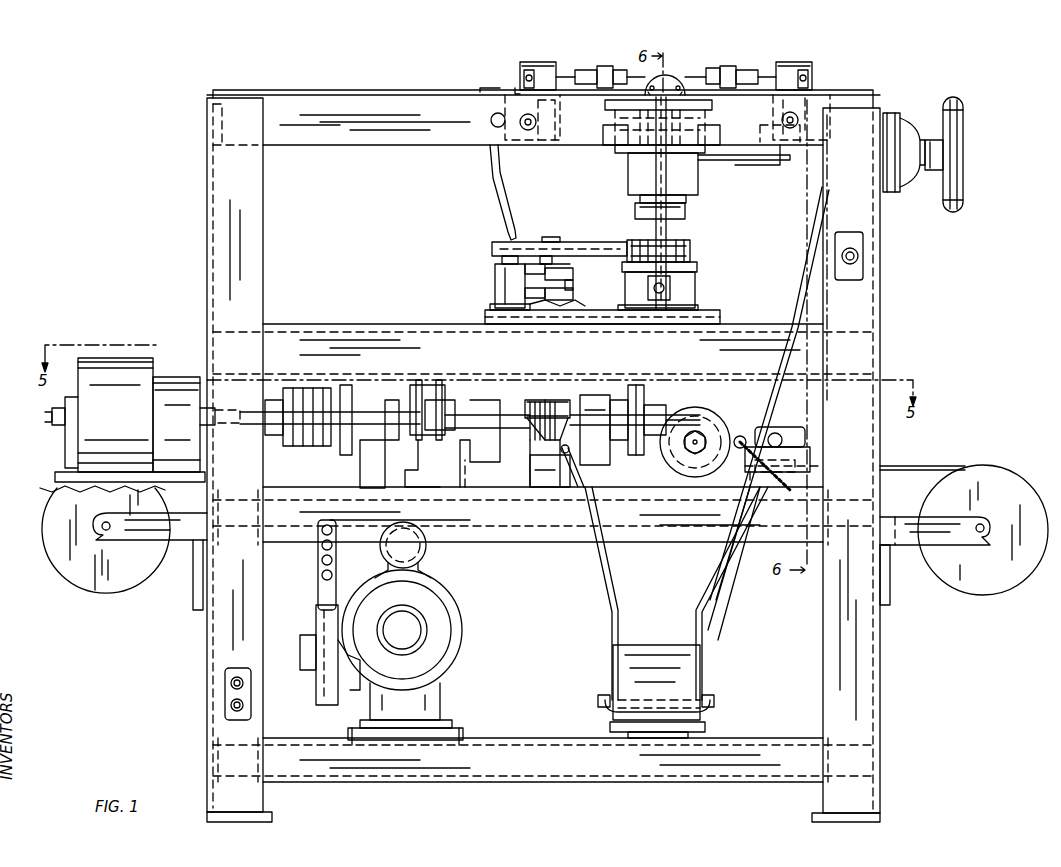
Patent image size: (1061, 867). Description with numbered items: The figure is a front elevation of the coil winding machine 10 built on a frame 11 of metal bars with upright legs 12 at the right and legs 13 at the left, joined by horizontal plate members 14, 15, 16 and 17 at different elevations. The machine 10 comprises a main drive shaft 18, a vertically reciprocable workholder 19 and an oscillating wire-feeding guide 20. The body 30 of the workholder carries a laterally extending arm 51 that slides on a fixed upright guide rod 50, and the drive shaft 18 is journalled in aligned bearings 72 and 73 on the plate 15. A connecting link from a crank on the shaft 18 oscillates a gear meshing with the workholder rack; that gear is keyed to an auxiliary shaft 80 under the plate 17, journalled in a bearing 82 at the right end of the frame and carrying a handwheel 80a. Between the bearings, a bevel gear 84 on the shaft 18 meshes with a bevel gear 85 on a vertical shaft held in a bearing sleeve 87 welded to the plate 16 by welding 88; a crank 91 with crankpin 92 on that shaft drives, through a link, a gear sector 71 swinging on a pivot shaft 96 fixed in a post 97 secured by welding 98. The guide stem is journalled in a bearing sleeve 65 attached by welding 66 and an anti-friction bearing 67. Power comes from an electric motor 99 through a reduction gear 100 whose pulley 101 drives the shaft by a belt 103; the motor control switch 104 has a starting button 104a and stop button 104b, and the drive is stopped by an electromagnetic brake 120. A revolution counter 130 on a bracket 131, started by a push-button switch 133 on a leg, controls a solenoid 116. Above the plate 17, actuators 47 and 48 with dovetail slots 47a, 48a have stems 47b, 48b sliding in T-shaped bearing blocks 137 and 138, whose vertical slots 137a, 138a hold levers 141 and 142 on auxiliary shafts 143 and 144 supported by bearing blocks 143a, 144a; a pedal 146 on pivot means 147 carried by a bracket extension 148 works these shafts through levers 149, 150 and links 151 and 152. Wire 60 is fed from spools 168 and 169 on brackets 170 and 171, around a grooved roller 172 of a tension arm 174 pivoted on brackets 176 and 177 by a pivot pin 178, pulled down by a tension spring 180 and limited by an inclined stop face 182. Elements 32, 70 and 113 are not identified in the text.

The coil winding machine 10 is at (388, 182).
The frame 11 is at (199, 243).
The upright legs 12 is at (865, 312).
The upright legs 13 is at (212, 272).
The plate member 14 is at (420, 726).
The plate member 15 is at (612, 486).
The plate member 16 is at (690, 310).
The plate member 17 is at (850, 97).
The main drive shaft 18 is at (565, 428).
The workholder 19 is at (620, 171).
The wire-feeding guide 20 is at (668, 75).
The body of the workholder 30 is at (632, 182).
The motor end cap 32 is at (55, 410).
The actuator 47 is at (740, 68).
The dovetail slot 47a is at (714, 68).
The stem portion 47b is at (768, 68).
The actuator 48 is at (612, 68).
The dovetail slot 48a is at (632, 68).
The stem portion 48b is at (583, 68).
The guide rod 50 is at (690, 198).
The arm 51 is at (685, 216).
The wire 60 is at (662, 420).
The bearing sleeve 65 is at (697, 270).
The welding 66 is at (690, 296).
The anti-friction bearing 67 is at (626, 400).
The gear 70 is at (692, 250).
The gear sector 71 is at (590, 240).
The bearing 72 is at (600, 395).
The bearing 73 is at (490, 395).
The auxiliary shaft 80 is at (728, 158).
The handwheel 80a is at (950, 98).
The bearing 82 is at (894, 120).
The bevel gear 84 is at (535, 470).
The bevel gear 85 is at (507, 409).
The bearing sleeve 87 is at (572, 294).
The welding 88 is at (572, 310).
The crank 91 is at (572, 274).
The crankpin 92 is at (552, 240).
The pivot shaft 96 is at (495, 252).
The post 97 is at (495, 282).
The welding 98 is at (495, 306).
The electric motor 99 is at (440, 605).
The reduction gear 100 is at (352, 692).
The pulley 101 is at (318, 616).
The belt 103 is at (318, 562).
The motor control switch 104 is at (228, 692).
The starting button 104a is at (233, 682).
The stop button 104b is at (232, 705).
The coupling 113 is at (392, 395).
The solenoid 116 is at (322, 384).
The electromagnetic brake 120 is at (432, 395).
The revolution counter 130 is at (118, 358).
The bracket 131 is at (65, 490).
The push-button switch 133 is at (858, 256).
The bearing block 137 is at (806, 52).
The vertical slot 137a is at (826, 64).
The bearing block 138 is at (553, 64).
The vertical slot 138a is at (522, 68).
The actuating lever 141 is at (806, 86).
The actuating lever 142 is at (520, 78).
The auxiliary shaft 143 is at (812, 152).
The bearing block 143a is at (776, 152).
The auxiliary shaft 144 is at (530, 138).
The bearing block 144a is at (552, 138).
The pedal 146 is at (660, 652).
The pivot means 147 is at (700, 698).
The bracket extension 148 is at (655, 745).
The lever 149 is at (816, 104).
The lever 150 is at (498, 88).
The link 151 is at (770, 316).
The link 152 is at (495, 172).
The spool 168 is at (992, 475).
The spool 169 is at (72, 570).
The bracket 170 is at (912, 548).
The bracket 171 is at (180, 548).
The grooved roller 172 is at (718, 418).
The tension arm 174 is at (745, 425).
The bracket 176 is at (800, 458).
The bracket 177 is at (560, 490).
The pivot pin 178 is at (776, 432).
The tension spring 180 is at (750, 487).
The inclined stop face 182 is at (798, 443).